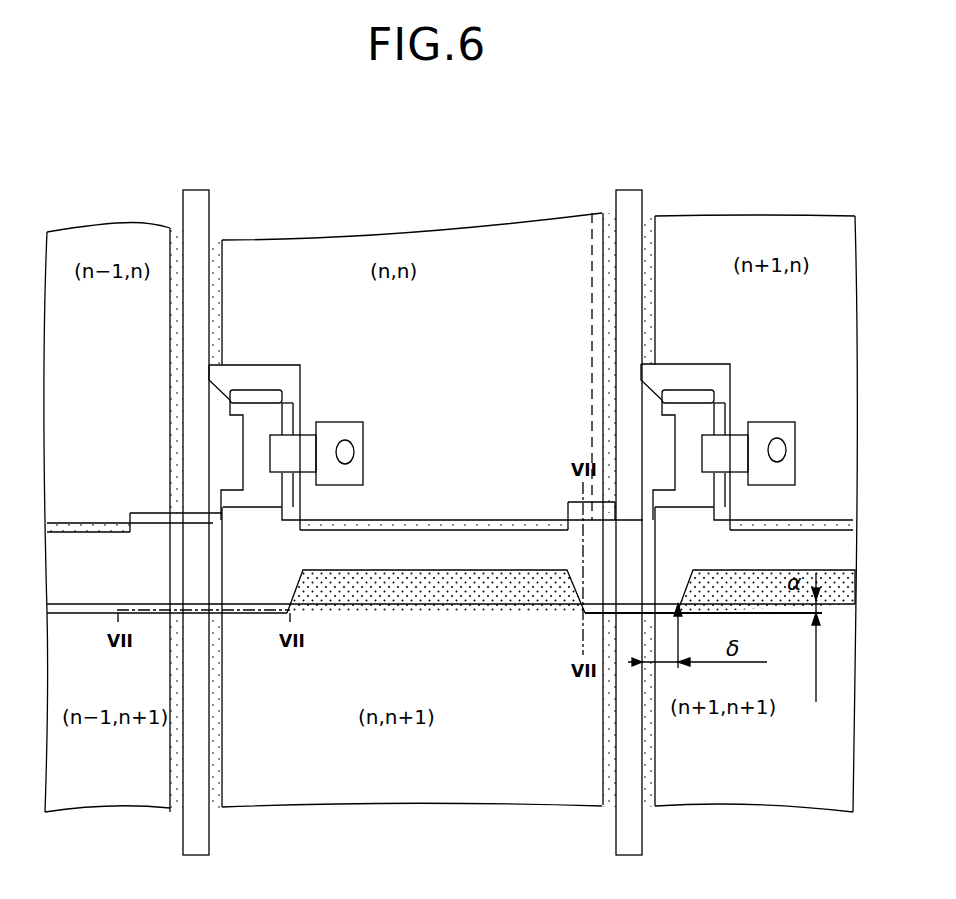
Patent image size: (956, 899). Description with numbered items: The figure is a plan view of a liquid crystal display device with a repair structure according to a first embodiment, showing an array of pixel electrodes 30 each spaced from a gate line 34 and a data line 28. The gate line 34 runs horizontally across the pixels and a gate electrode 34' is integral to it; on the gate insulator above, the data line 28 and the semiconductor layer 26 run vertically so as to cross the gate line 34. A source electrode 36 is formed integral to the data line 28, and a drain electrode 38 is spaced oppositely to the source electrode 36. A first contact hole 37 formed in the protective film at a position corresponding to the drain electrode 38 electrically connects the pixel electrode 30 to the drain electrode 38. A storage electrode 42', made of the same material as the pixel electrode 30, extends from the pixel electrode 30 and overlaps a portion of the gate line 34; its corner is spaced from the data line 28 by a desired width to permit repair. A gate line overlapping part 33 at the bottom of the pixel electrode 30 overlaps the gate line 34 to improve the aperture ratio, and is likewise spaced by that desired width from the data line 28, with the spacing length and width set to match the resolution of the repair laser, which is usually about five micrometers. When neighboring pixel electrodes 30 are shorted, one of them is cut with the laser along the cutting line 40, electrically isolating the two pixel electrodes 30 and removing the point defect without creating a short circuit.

The semiconductor layer 26 is at (209, 830).
The data line 28 is at (223, 742).
The pixel electrode 30 is at (469, 431).
The gate line overlapping part 33 is at (442, 520).
The gate line 34 is at (134, 484).
The gate electrode 34' is at (469, 417).
The source electrode 36 is at (240, 405).
The first contact hole 37 is at (355, 452).
The drain electrode 38 is at (352, 422).
The cutting line 40 is at (592, 280).
The storage electrode 42' is at (571, 604).